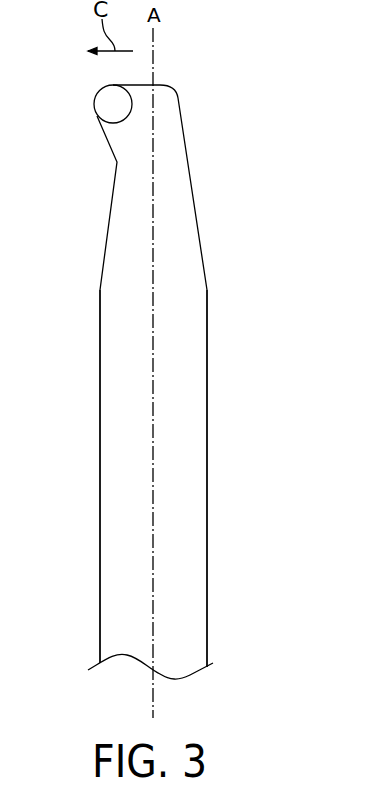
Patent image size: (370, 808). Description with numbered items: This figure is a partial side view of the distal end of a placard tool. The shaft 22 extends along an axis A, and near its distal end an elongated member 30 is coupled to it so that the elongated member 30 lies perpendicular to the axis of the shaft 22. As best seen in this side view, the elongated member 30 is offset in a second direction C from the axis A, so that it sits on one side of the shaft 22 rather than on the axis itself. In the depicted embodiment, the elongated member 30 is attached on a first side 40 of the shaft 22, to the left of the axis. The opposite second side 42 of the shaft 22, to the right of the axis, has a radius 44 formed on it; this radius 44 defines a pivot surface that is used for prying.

The shaft 22 is at (193, 538).
The elongated member 30 is at (103, 105).
The first side 40 is at (98, 427).
The second side 42 is at (207, 388).
The radius 44 is at (182, 95).